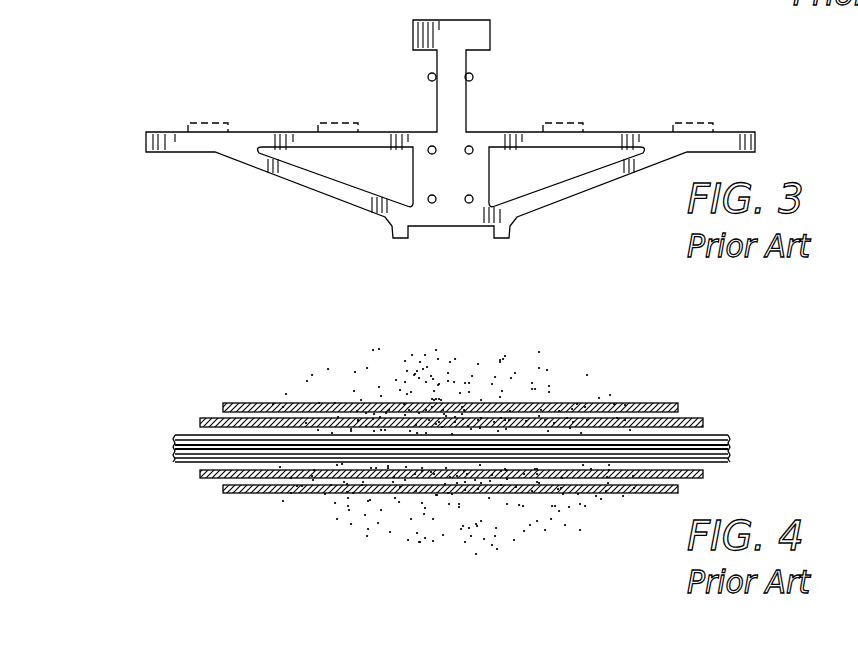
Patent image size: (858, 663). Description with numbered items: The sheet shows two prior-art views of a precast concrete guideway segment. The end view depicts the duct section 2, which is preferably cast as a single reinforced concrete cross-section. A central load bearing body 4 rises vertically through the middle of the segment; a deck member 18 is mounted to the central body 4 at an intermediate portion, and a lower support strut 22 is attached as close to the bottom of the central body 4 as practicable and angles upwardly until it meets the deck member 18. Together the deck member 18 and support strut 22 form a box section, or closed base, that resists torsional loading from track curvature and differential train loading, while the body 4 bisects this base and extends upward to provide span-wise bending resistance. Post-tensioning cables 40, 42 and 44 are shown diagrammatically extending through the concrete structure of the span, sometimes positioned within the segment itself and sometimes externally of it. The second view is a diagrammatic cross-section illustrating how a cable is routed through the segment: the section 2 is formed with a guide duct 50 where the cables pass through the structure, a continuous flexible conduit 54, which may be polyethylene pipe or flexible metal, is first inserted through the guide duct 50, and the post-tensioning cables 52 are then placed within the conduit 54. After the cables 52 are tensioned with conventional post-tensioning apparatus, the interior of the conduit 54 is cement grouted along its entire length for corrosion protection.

In FIG. 3, the central load bearing body 4 is at (418, 31).
In FIG. 3, the deck member 18 is at (598, 131).
In FIG. 3, the lower support strut 22 is at (297, 178).
In FIG. 3, the post-tensioning cable 40 is at (473, 81).
In FIG. 3, the post-tensioning cable 42 is at (429, 196).
In FIG. 3, the post-tensioning cable 44 is at (473, 196).
In FIG. 4, the duct section 2 is at (352, 378).
In FIG. 4, the guide duct 50 is at (224, 407).
In FIG. 4, the post-tensioning cables 52 is at (194, 464).
In FIG. 4, the continuous flexible conduit 54 is at (692, 418).